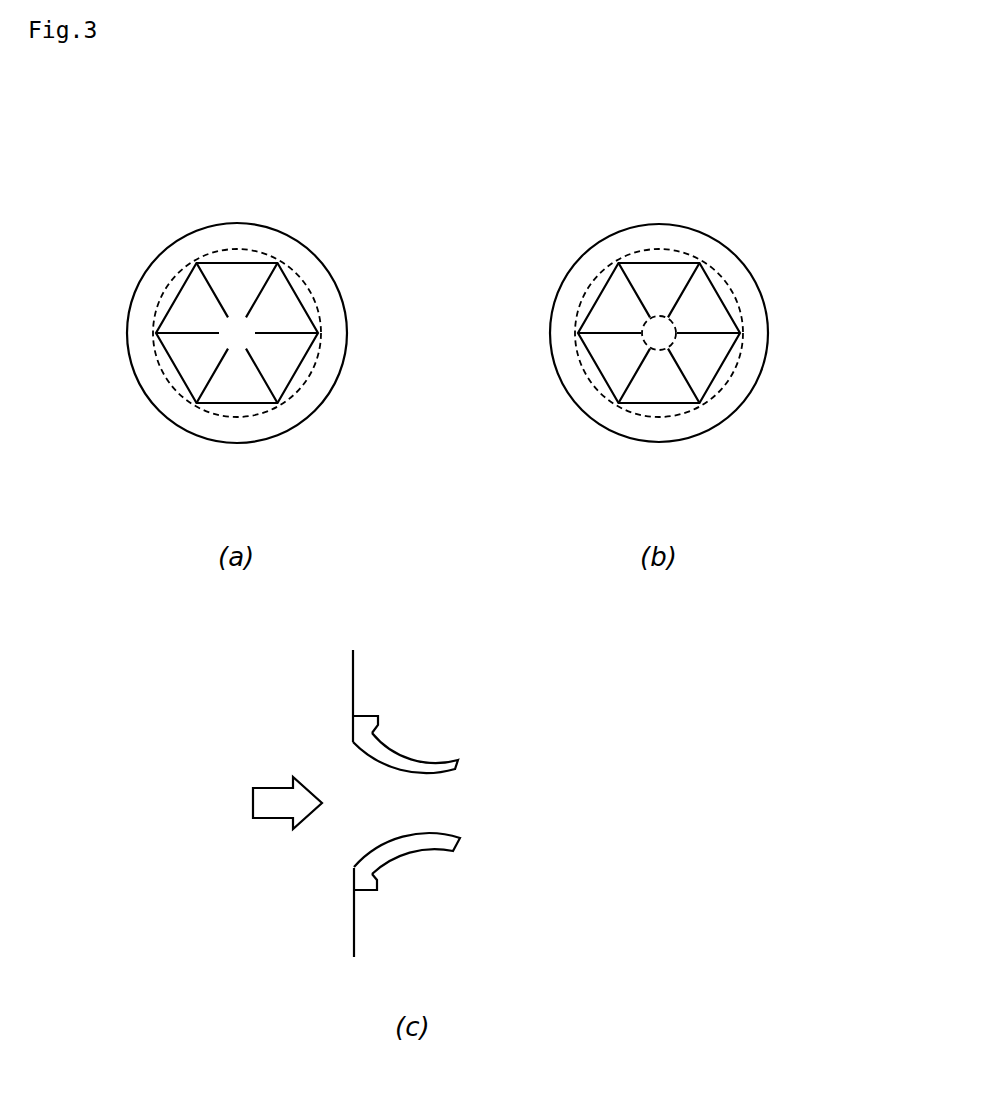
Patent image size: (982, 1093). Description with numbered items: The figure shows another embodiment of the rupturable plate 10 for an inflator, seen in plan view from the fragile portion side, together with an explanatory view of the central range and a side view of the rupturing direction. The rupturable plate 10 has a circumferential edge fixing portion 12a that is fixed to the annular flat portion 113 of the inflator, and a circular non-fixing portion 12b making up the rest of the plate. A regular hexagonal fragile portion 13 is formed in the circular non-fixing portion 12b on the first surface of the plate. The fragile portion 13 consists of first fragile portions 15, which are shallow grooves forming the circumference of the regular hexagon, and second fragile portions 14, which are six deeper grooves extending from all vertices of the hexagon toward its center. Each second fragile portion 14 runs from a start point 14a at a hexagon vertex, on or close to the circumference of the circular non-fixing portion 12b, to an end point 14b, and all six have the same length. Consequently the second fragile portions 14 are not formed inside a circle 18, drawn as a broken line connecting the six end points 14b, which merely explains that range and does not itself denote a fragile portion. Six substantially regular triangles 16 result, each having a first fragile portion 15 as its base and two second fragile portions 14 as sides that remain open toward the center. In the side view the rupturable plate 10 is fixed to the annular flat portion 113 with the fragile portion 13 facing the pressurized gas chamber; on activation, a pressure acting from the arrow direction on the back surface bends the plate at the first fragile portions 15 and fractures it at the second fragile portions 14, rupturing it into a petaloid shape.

The rupturable plate 10 is at (447, 550).
The circumferential edge fixing portion 12a is at (185, 255).
The circular non-fixing portion 12b is at (300, 378).
The fragile portion 13 is at (469, 596).
The second fragile portion 14 is at (442, 381).
The start point 14a is at (195, 405).
The end point 14b is at (225, 347).
The first fragile portion 15 is at (318, 362).
The substantially regular triangle 16 is at (237, 278).
The circle 18 is at (670, 343).
The annular flat portion 113 is at (355, 663).